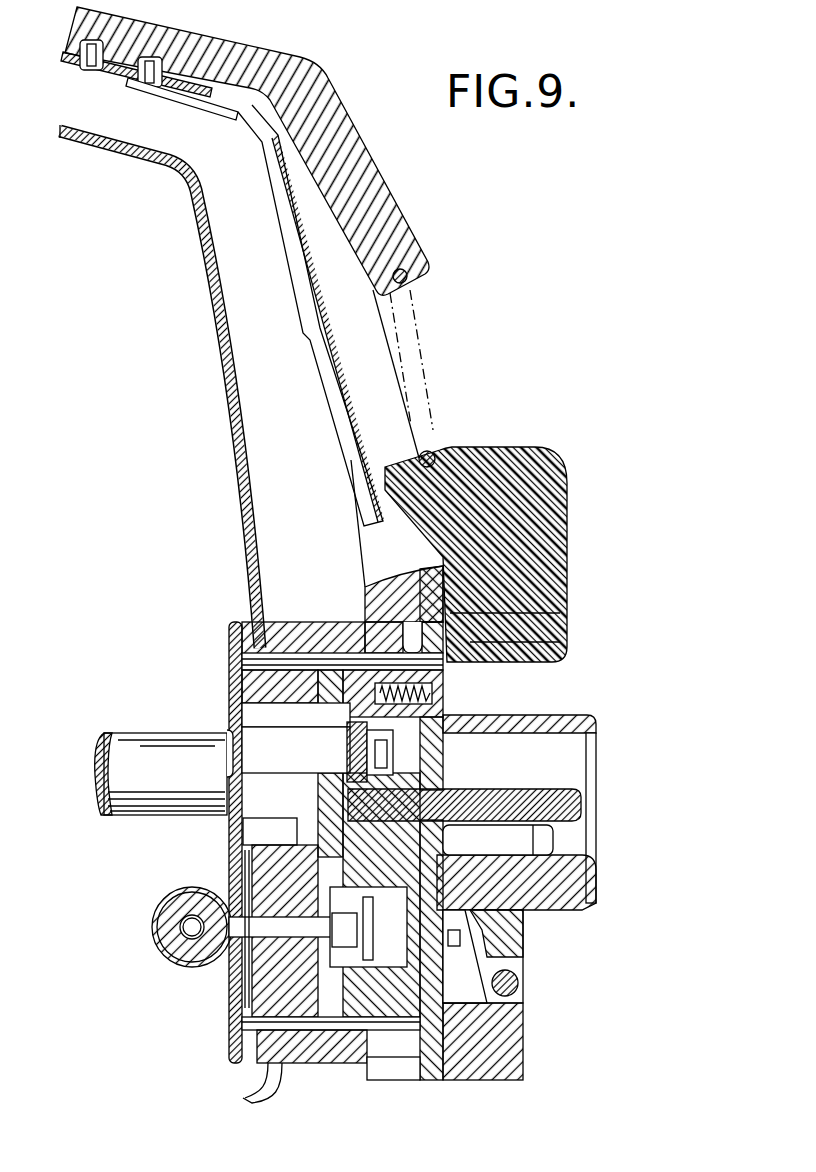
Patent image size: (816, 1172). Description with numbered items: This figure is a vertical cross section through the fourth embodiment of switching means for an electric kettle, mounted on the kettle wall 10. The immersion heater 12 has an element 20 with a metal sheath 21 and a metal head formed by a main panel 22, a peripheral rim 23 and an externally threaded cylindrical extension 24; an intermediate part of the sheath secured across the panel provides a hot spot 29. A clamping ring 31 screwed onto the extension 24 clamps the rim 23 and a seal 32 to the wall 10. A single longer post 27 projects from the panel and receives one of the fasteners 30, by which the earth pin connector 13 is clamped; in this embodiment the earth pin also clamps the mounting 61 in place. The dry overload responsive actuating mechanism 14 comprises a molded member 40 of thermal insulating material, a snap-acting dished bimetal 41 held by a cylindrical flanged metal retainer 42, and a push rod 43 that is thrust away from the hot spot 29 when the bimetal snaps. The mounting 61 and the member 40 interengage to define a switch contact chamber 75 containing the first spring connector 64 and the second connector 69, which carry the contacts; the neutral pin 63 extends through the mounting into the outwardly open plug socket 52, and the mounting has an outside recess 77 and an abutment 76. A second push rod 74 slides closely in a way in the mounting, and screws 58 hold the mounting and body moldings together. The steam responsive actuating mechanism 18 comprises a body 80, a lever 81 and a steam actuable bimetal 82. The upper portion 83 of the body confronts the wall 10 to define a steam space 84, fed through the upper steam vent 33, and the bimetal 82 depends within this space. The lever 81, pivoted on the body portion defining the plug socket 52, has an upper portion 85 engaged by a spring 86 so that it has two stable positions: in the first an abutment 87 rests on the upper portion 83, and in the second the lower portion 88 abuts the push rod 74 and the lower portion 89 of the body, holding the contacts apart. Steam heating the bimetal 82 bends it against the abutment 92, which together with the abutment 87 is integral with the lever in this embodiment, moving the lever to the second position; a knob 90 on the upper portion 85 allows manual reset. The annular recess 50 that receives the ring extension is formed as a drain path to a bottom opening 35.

The wall 10 is at (255, 600).
The immersion heater 12 is at (140, 755).
The earth pin connector 13 is at (585, 806).
The dry overload responsive actuating mechanism 14 is at (247, 1010).
The steam responsive actuating mechanism 18 is at (540, 520).
The element 20 is at (170, 935).
The metal sheath 21 is at (160, 915).
The main panel 22 is at (231, 660).
The peripheral rim 23 is at (240, 635).
The externally threaded cylindrical extension 24 is at (303, 1063).
The post 27 is at (262, 730).
The hot spot 29 is at (233, 957).
The fasteners 30 is at (395, 762).
The clamping ring 31 is at (337, 1063).
The seal 32 is at (262, 622).
The upper steam vent 33 is at (93, 150).
The bottom opening 35 is at (397, 1067).
The molded member 40 is at (250, 858).
The bimetal 41 is at (243, 987).
The cylindrical flanged metal retainer 42 is at (247, 1038).
The push rod 43 is at (283, 920).
The annular recess 50 is at (412, 633).
The plug socket 52 is at (587, 757).
The screws 58 is at (442, 693).
The mounting 61 is at (428, 1000).
The neutral pin 63 is at (533, 843).
The first spring connector 64 is at (370, 940).
The second connector 69 is at (248, 1063).
The second push rod 74 is at (455, 937).
The switch contact chamber 75 is at (385, 942).
The abutment 76 is at (330, 795).
The recess 77 is at (413, 744).
The body 80 is at (363, 595).
The lever 81 is at (560, 642).
The steam actuable bi-metal 82 is at (262, 147).
The upper portion 83 is at (395, 215).
The steam space 84 is at (222, 196).
The upper portion 85 is at (440, 455).
The spring 86 is at (430, 318).
The abutment 87 is at (560, 613).
The lower portion 88 is at (520, 947).
The lower portion 89 is at (517, 1023).
The knob 90 is at (547, 460).
The abutment 92 is at (383, 470).